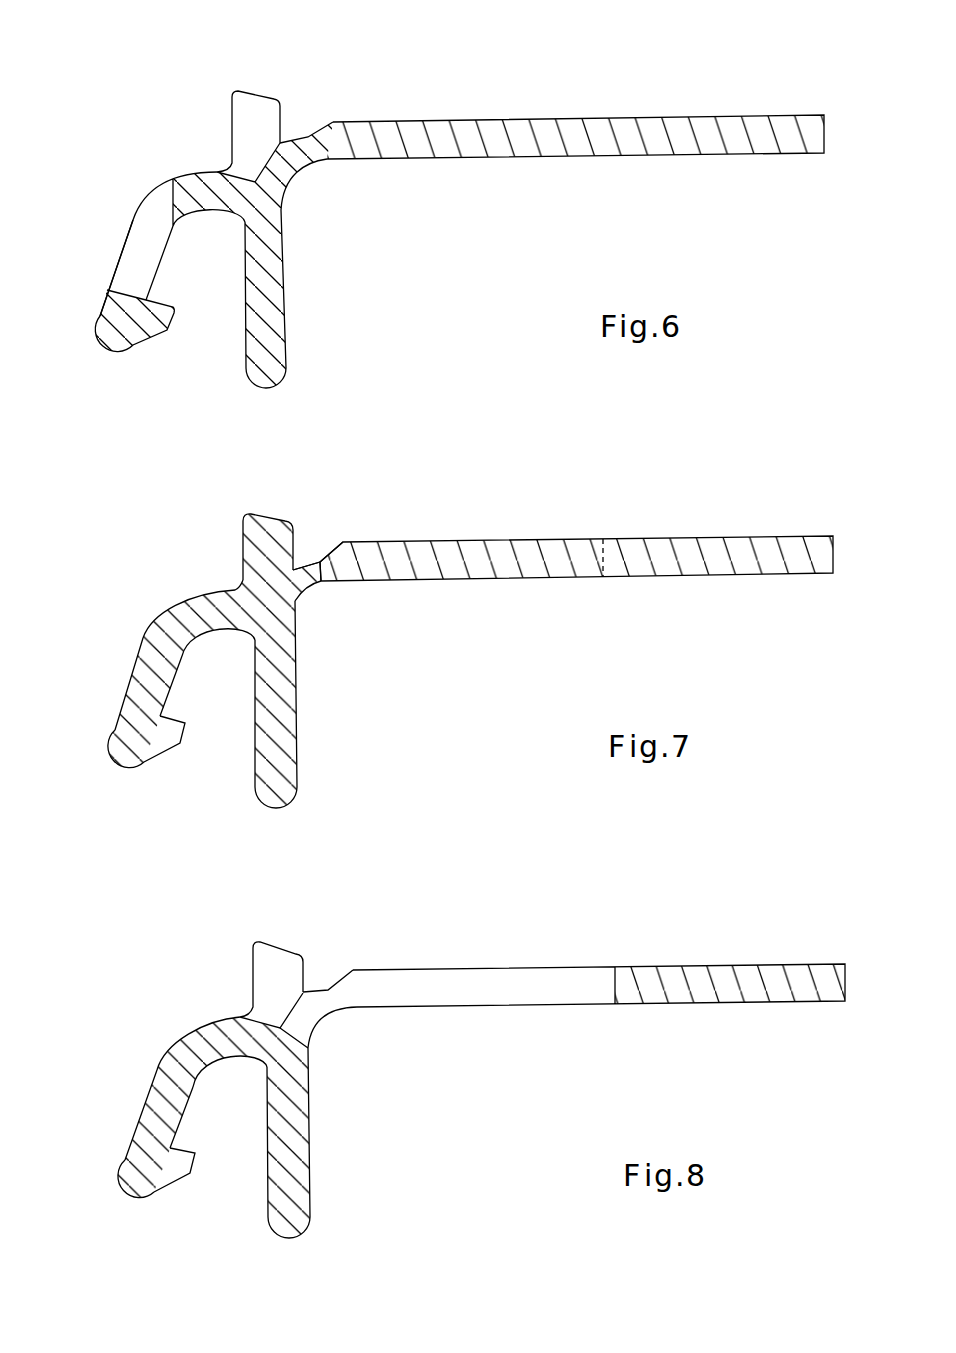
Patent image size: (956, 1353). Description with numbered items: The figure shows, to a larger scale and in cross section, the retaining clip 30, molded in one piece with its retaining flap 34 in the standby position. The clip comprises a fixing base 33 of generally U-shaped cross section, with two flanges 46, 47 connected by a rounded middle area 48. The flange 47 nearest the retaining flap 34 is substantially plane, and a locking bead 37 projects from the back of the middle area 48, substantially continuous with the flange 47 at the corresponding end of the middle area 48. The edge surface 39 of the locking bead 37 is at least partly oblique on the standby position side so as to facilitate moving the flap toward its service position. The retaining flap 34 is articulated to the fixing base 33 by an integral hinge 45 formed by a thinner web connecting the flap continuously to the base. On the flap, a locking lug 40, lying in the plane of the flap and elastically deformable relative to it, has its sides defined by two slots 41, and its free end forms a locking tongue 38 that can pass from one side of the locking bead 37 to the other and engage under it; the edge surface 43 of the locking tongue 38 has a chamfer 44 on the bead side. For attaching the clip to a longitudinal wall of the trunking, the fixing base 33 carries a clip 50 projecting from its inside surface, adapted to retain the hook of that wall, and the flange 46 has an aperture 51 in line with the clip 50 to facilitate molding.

In FIG. 6, the retaining clip 30 is at (533, 101).
In FIG. 7, the retaining clip 30 is at (537, 493).
In FIG. 8, the retaining clip 30 is at (561, 912).
In FIG. 6, the fixing base 33 is at (104, 362).
In FIG. 7, the fixing base 33 is at (122, 769).
In FIG. 8, the fixing base 33 is at (130, 1206).
In FIG. 6, the retaining flap 34 is at (728, 112).
In FIG. 7, the retaining flap 34 is at (752, 534).
In FIG. 8, the retaining flap 34 is at (780, 962).
In FIG. 6, the locking bead 37 is at (226, 99).
In FIG. 7, the locking bead 37 is at (240, 515).
In FIG. 8, the locking bead 37 is at (248, 945).
In FIG. 7, the locking tongue 38 is at (334, 588).
In FIG. 6, the edge surface 39 is at (264, 93).
In FIG. 7, the edge surface 39 is at (273, 512).
In FIG. 8, the edge surface 39 is at (287, 940).
In FIG. 7, the locking lug 40 is at (490, 556).
In FIG. 7, the slots 41 is at (595, 563).
In FIG. 8, the slots 41 is at (526, 990).
In FIG. 7, the edge surface 43 is at (310, 584).
In FIG. 7, the chamfer 44 is at (322, 561).
In FIG. 6, the integral hinge 45 is at (289, 159).
In FIG. 7, the integral hinge 45 is at (303, 569).
In FIG. 8, the integral hinge 45 is at (308, 1017).
In FIG. 6, the flange 46 is at (113, 272).
In FIG. 7, the flange 46 is at (125, 712).
In FIG. 8, the flange 46 is at (137, 1125).
In FIG. 6, the flange 47 is at (274, 340).
In FIG. 7, the flange 47 is at (287, 743).
In FIG. 8, the flange 47 is at (297, 1190).
In FIG. 6, the rounded middle area 48 is at (192, 182).
In FIG. 7, the rounded middle area 48 is at (180, 607).
In FIG. 8, the rounded middle area 48 is at (190, 1036).
In FIG. 6, the clip 50 is at (176, 298).
In FIG. 7, the clip 50 is at (184, 718).
In FIG. 8, the clip 50 is at (194, 1148).
In FIG. 6, the aperture 51 is at (142, 224).